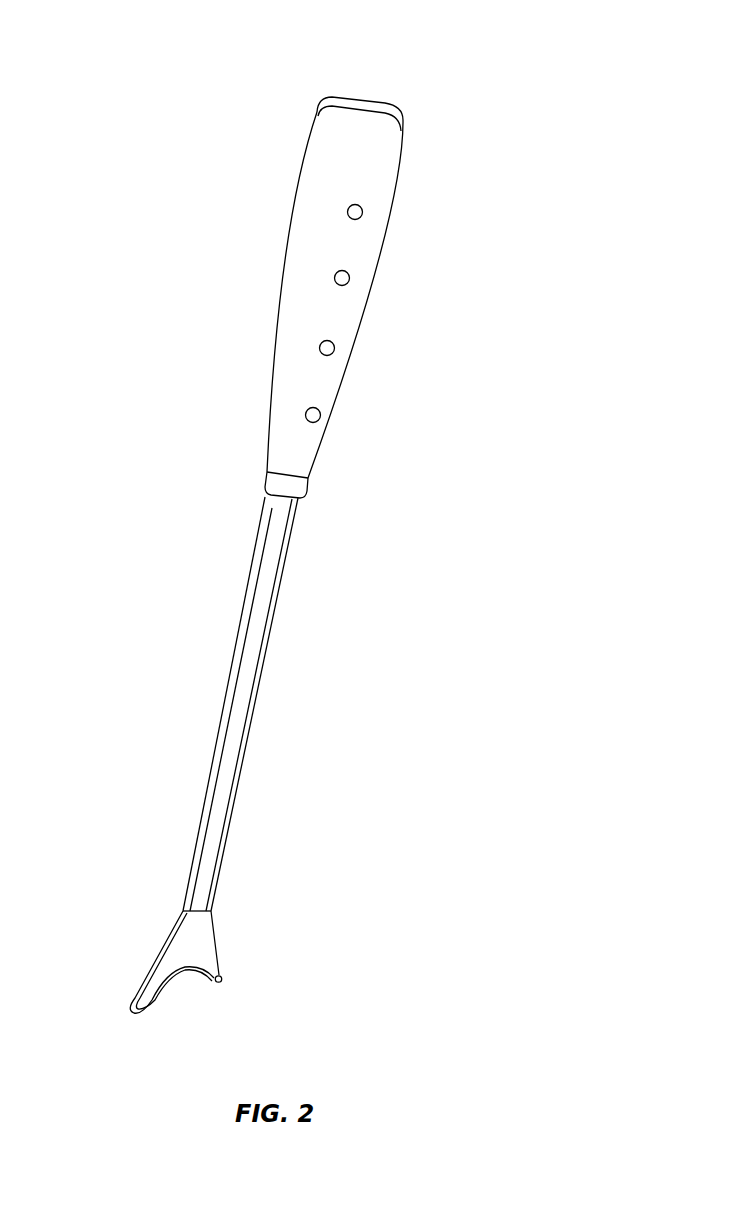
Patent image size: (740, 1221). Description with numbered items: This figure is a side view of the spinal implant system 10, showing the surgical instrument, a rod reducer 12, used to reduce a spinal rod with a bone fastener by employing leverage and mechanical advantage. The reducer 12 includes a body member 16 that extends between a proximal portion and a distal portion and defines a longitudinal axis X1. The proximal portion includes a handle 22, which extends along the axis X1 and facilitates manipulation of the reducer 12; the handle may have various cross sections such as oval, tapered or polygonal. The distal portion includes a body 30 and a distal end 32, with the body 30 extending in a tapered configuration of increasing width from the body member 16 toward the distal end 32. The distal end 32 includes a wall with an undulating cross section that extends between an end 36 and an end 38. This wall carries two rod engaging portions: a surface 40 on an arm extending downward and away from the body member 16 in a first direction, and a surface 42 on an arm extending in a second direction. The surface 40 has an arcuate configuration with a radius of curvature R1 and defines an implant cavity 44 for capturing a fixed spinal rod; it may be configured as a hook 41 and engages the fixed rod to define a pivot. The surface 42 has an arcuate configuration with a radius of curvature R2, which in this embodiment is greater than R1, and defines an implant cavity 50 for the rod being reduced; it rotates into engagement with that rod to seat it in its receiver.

The spinal implant system 10 is at (88, 151).
The rod reducer 12 is at (178, 320).
The handle 22 is at (345, 312).
The longitudinal axis X1 is at (368, 92).
The body member 16 is at (255, 668).
The body 30 is at (195, 930).
The distal end 32 is at (290, 942).
The end 36 is at (124, 1008).
The end 38 is at (222, 977).
The surface 40 is at (136, 1002).
The hook 41 is at (134, 1023).
The surface 42 is at (216, 983).
The implant cavity 44 is at (141, 977).
The implant cavity 50 is at (176, 1006).
The radius of curvature R1 is at (139, 997).
The radius of curvature R2 is at (188, 974).